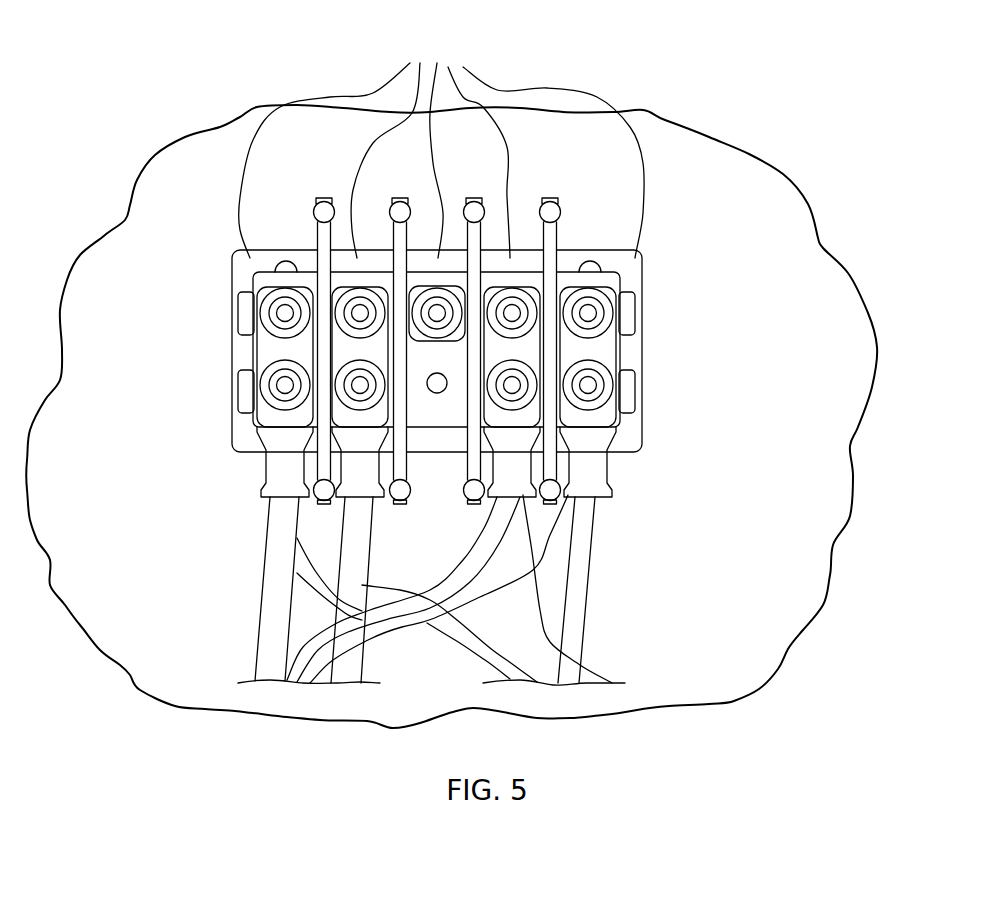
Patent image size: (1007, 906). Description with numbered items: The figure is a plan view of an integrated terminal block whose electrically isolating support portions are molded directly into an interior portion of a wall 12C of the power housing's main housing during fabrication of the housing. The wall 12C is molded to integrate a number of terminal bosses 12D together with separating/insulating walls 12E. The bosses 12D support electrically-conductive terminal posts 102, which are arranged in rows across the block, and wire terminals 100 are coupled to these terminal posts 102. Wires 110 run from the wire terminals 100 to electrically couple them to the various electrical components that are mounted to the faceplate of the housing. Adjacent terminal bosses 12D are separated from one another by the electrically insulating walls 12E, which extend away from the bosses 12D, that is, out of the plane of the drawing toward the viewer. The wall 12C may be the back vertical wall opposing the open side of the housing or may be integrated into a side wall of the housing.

The wall 12C is at (773, 238).
The terminal bosses 12D is at (442, 145).
The separating/insulating walls 12E is at (315, 230).
The wire terminals 100 is at (337, 468).
The terminal posts 102 is at (283, 313).
The wires 110 is at (270, 571).